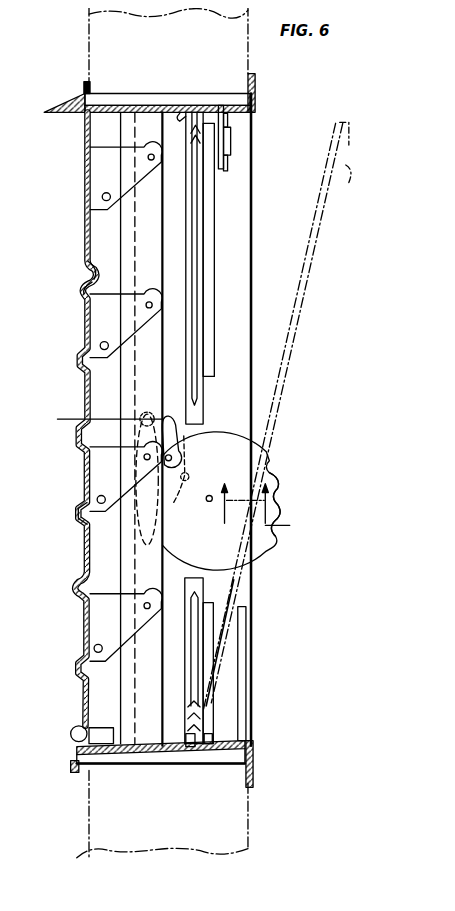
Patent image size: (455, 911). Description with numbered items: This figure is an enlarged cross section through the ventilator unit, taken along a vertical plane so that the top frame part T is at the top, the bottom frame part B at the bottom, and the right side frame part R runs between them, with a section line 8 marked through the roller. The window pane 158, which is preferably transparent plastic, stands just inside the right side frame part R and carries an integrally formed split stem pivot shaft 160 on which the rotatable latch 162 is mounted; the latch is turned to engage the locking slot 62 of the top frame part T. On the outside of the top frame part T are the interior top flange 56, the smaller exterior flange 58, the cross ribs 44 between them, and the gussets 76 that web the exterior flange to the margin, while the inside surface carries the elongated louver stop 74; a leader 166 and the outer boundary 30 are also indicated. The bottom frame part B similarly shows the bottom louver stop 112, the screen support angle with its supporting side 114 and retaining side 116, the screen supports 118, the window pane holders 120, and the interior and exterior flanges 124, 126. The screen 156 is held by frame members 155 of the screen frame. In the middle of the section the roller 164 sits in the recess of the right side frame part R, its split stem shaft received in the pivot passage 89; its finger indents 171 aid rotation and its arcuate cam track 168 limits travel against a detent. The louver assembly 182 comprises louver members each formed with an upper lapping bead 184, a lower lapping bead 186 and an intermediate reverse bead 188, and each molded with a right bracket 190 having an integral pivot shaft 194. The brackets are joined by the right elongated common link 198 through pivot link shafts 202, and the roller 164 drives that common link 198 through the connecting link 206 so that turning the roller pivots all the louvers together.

The door boundary 30 is at (86, 16).
The cross ribs 44 is at (113, 86).
The interior top flange 56 is at (252, 86).
The exterior flange 58 is at (83, 78).
The locking slot 62 is at (217, 100).
The louver stop 74 is at (85, 116).
The gussets 76 is at (62, 97).
The pivot passage 89 is at (202, 499).
The bottom louver stop 112 is at (71, 729).
The screen support angle side 114 is at (182, 729).
The screen support angle side 116 is at (186, 717).
The screen supports 118 is at (204, 720).
The window pane holders 120 is at (209, 737).
The interior flange 124 is at (249, 774).
The exterior flange 126 is at (69, 766).
The frame members 155 is at (202, 700).
The screen 156 is at (193, 220).
The window pane 158 is at (205, 250).
The split stem pivot shaft 160 is at (228, 137).
The rotatable latch 162 is at (224, 117).
The roller 164 is at (266, 459).
The hook 166 is at (180, 106).
The cam track 168 is at (185, 123).
The finger indents 171 is at (273, 484).
The side wall 182 is at (80, 546).
The upper lapping bead 184 is at (85, 263).
The lower lapping bead 186 is at (80, 284).
The intermediate reverse bead 188 is at (88, 516).
The right bracket 190 is at (103, 160).
The pivot shaft 194 is at (97, 190).
The right elongated common link 198 is at (143, 378).
The pivot link shafts 202 is at (144, 298).
The connecting link 206 is at (94, 419).
The top frame part T is at (143, 91).
The bottom frame part B is at (136, 761).
The right side frame part R is at (233, 295).
The section line 8- 8 is at (255, 509).